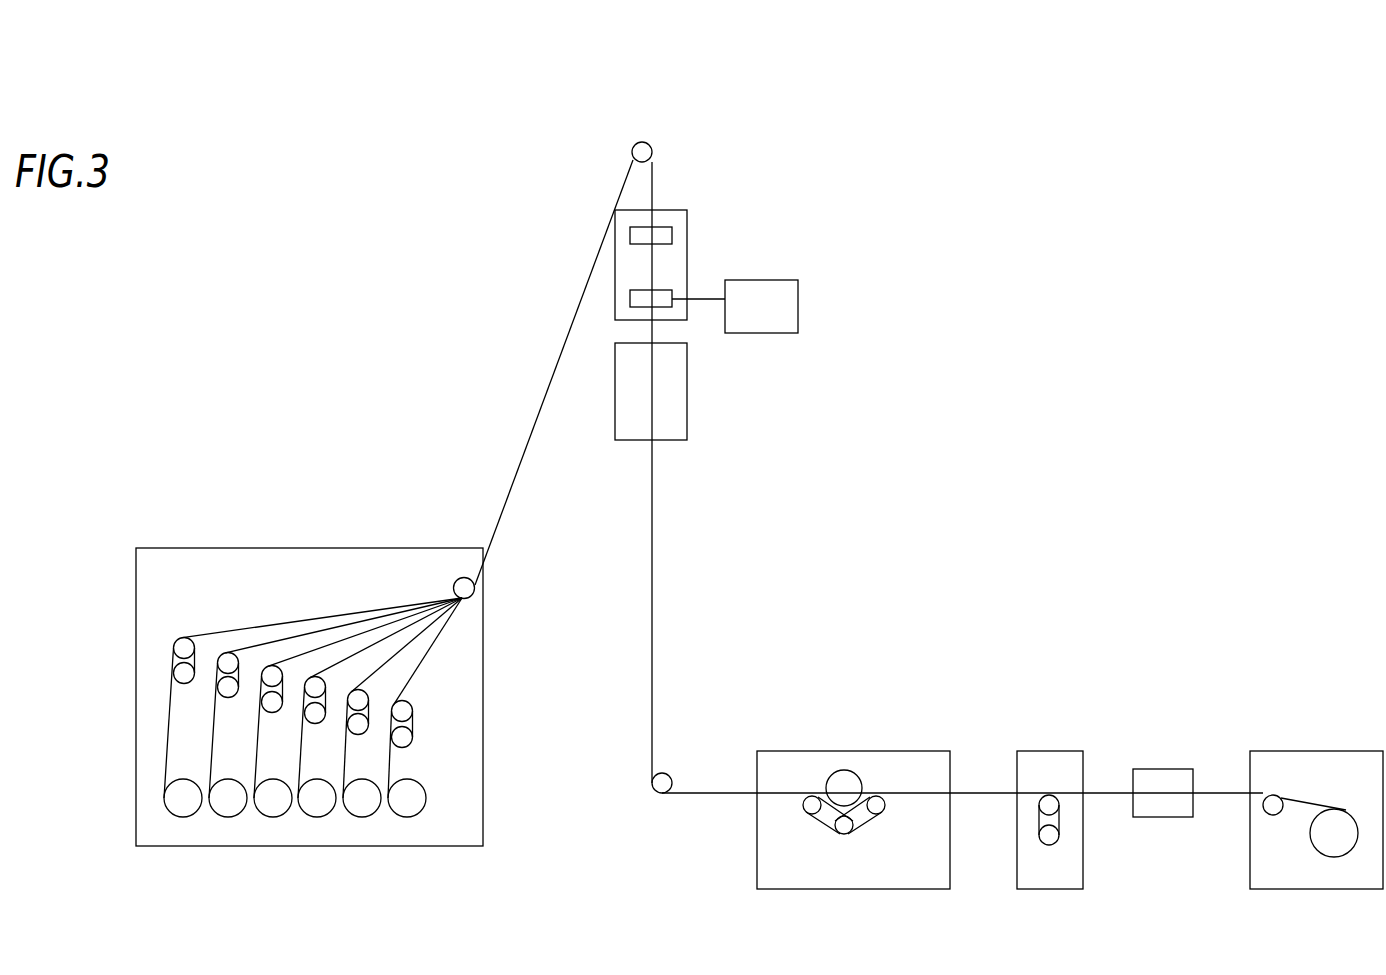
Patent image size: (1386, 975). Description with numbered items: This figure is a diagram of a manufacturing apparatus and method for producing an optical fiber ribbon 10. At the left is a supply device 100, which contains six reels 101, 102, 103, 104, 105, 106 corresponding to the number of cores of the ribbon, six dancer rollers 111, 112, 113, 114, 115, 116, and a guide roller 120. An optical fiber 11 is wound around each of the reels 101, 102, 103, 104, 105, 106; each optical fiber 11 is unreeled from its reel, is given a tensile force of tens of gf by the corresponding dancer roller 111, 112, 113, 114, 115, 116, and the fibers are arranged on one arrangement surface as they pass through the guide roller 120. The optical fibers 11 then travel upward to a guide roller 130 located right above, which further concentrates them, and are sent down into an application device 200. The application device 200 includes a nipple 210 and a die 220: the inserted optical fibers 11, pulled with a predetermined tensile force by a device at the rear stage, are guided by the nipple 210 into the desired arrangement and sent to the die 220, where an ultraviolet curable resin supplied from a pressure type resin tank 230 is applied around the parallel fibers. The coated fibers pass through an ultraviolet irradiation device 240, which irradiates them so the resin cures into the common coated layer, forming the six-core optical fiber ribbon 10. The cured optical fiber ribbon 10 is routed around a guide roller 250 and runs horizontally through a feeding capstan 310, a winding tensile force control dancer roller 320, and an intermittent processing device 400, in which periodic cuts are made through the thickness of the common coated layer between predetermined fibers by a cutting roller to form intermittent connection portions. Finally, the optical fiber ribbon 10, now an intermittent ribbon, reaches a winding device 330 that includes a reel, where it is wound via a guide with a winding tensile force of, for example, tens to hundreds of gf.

The optical fiber ribbon 10 is at (653, 540).
The optical fiber 11 is at (168, 752).
The supply device 100 is at (323, 548).
The reel 101 is at (181, 817).
The reel 102 is at (226, 817).
The reel 103 is at (271, 817).
The reel 104 is at (315, 817).
The reel 105 is at (360, 817).
The reel 106 is at (405, 817).
The dancer roller 111 is at (174, 657).
The dancer roller 112 is at (217, 679).
The dancer roller 113 is at (261, 692).
The dancer roller 114 is at (326, 691).
The dancer roller 115 is at (369, 701).
The dancer roller 116 is at (413, 722).
The guide roller 120 is at (461, 579).
The guide roller 130 is at (632, 152).
The application device 200 is at (710, 193).
The nipple 210 is at (673, 237).
The die 220 is at (665, 287).
The pressure type resin tank 230 is at (799, 305).
The ultraviolet irradiation device 240 is at (688, 396).
The guide roller 250 is at (668, 775).
The feeding capstan 310 is at (885, 751).
The winding tensile force control dancer roller 320 is at (1053, 751).
The winding device 330 is at (1343, 751).
The intermittent processing device 400 is at (1165, 769).